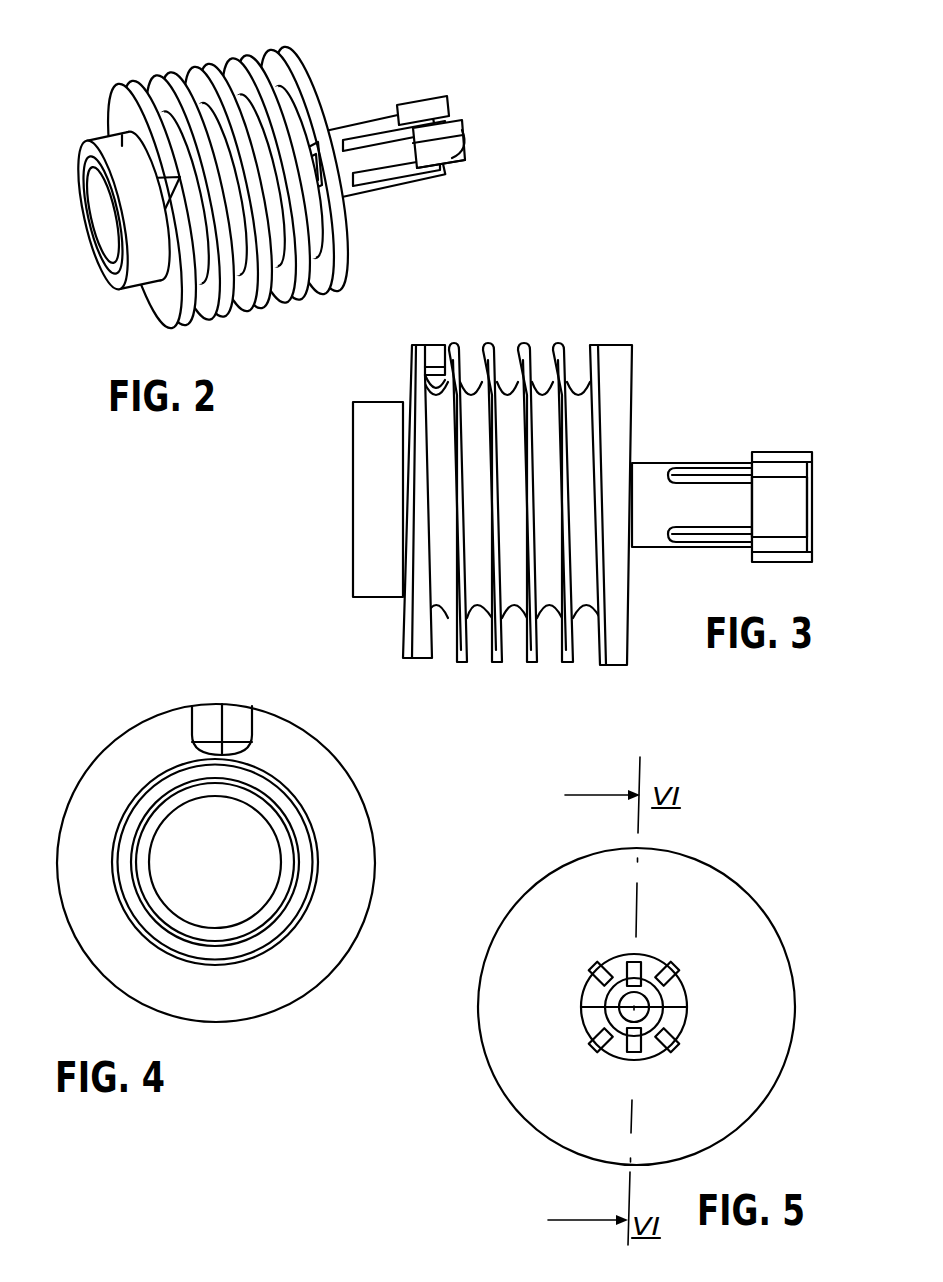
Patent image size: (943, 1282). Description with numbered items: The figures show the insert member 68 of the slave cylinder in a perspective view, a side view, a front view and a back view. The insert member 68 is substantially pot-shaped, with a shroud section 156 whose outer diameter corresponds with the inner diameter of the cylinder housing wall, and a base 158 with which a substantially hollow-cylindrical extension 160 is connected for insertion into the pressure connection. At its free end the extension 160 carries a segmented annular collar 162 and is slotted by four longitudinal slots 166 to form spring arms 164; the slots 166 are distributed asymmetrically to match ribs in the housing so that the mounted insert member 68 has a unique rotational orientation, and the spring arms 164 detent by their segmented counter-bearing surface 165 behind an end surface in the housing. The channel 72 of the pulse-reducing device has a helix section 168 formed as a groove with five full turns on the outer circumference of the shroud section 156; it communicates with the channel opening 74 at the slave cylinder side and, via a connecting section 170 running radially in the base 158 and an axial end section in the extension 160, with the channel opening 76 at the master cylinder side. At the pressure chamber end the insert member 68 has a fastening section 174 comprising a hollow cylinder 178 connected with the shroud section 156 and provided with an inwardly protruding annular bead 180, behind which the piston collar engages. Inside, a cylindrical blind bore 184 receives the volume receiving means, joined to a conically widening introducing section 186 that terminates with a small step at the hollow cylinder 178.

In FIG. 2, the insert member 68 is at (327, 78).
In FIG. 3, the insert member 68 is at (661, 362).
In FIG. 4, the insert member 68 is at (378, 796).
In FIG. 5, the insert member 68 is at (763, 895).
In FIG. 2, the channel 72 is at (183, 72).
In FIG. 3, the channel 72 is at (505, 356).
In FIG. 4, the channel 72 is at (230, 725).
In FIG. 5, the channel 72 is at (588, 1023).
In FIG. 2, the channel opening 74 is at (112, 113).
In FIG. 3, the channel opening 74 is at (435, 381).
In FIG. 4, the channel opening 74 is at (203, 722).
In FIG. 2, the channel opening 76 is at (430, 135).
In FIG. 5, the channel opening 76 is at (670, 983).
In FIG. 2, the shroud section 156 is at (137, 88).
In FIG. 3, the shroud section 156 is at (413, 648).
In FIG. 4, the shroud section 156 is at (90, 750).
In FIG. 5, the shroud section 156 is at (540, 868).
In FIG. 2, the base 158 is at (348, 227).
In FIG. 3, the base 158 is at (640, 575).
In FIG. 5, the base 158 is at (583, 944).
In FIG. 2, the extension 160 is at (352, 117).
In FIG. 3, the extension 160 is at (652, 462).
In FIG. 5, the extension 160 is at (700, 990).
In FIG. 2, the segmented annular collar 162 is at (422, 107).
In FIG. 3, the segmented annular collar 162 is at (802, 517).
In FIG. 5, the segmented annular collar 162 is at (623, 955).
In FIG. 2, the spring arms 164 is at (448, 112).
In FIG. 3, the spring arms 164 is at (815, 455).
In FIG. 5, the spring arms 164 is at (590, 978).
In FIG. 2, the counter-bearing surface 165 is at (408, 168).
In FIG. 3, the counter-bearing surface 165 is at (753, 457).
In FIG. 2, the slots 166 is at (393, 167).
In FIG. 3, the slots 166 is at (710, 494).
In FIG. 5, the slots 166 is at (582, 1010).
In FIG. 2, the helix section 168 is at (253, 90).
In FIG. 3, the helix section 168 is at (542, 368).
In FIG. 2, the connecting section 170 is at (298, 43).
In FIG. 2, the fastening section 174 is at (133, 276).
In FIG. 3, the fastening section 174 is at (348, 550).
In FIG. 4, the fastening section 174 is at (257, 943).
In FIG. 2, the hollow cylinder 178 is at (128, 245).
In FIG. 3, the hollow cylinder 178 is at (393, 490).
In FIG. 4, the hollow cylinder 178 is at (285, 923).
In FIG. 2, the annular bead 180 is at (93, 210).
In FIG. 4, the annular bead 180 is at (233, 933).
In FIG. 4, the cylindrical blind bore 184 is at (173, 817).
In FIG. 4, the introducing section 186 is at (257, 803).